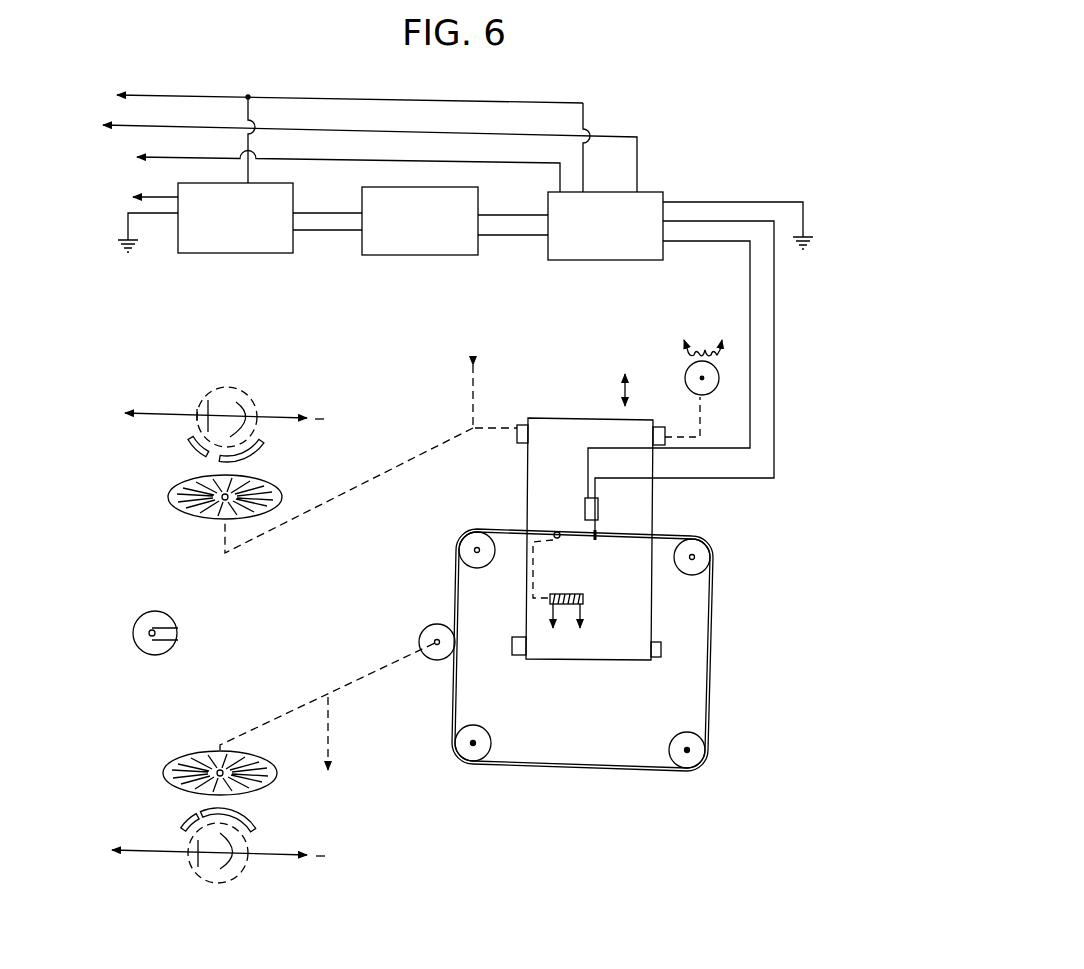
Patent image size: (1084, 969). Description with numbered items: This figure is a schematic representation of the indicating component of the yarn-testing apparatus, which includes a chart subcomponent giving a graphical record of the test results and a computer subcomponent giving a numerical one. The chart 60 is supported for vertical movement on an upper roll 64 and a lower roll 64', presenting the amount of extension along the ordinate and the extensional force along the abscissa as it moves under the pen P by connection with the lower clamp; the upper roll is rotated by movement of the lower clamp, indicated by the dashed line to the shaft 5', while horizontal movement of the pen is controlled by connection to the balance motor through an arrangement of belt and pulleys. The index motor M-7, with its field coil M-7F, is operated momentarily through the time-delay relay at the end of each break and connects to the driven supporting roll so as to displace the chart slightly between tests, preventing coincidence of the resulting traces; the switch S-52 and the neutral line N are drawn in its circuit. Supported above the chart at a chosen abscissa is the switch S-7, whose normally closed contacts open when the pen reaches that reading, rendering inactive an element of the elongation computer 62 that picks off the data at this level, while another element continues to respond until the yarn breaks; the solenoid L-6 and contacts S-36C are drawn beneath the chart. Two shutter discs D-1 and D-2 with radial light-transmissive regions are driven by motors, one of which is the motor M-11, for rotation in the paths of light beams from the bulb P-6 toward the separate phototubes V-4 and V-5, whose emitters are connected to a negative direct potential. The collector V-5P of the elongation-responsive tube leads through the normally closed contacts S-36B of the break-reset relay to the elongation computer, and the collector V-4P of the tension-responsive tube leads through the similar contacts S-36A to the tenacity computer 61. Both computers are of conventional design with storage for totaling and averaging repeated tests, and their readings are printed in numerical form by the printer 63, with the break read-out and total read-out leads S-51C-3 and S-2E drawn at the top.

The chart 60 is at (528, 463).
The tenacity computer 61 is at (227, 250).
The elongation computer 62 is at (607, 254).
The printer 63 is at (415, 254).
The upper roll 64 is at (591, 418).
The lower roll 64' is at (567, 654).
The drive shaft 5' is at (371, 444).
The switch S-7 is at (584, 513).
The switch S-52 is at (721, 333).
The index motor M-7 is at (685, 391).
The motor field coil M-7F is at (686, 352).
The motor M-11 is at (331, 746).
The pen P is at (546, 565).
The solenoid L-6 is at (566, 602).
The switch S-36C is at (552, 646).
The neutral line N is at (632, 484).
The phototube V-5 is at (186, 428).
The collector V-5P is at (204, 409).
The phototube V-4 is at (176, 840).
The collector V-4P is at (190, 858).
The shutter disc D-2 is at (204, 497).
The shutter disc D-1 is at (198, 773).
The bulb P-6 is at (175, 622).
The contacts of break-reset relay S-36A is at (122, 196).
The contacts of break-reset relay S-36B is at (306, 169).
The switch S-2E is at (342, 151).
The switch S-51C-3 is at (319, 135).